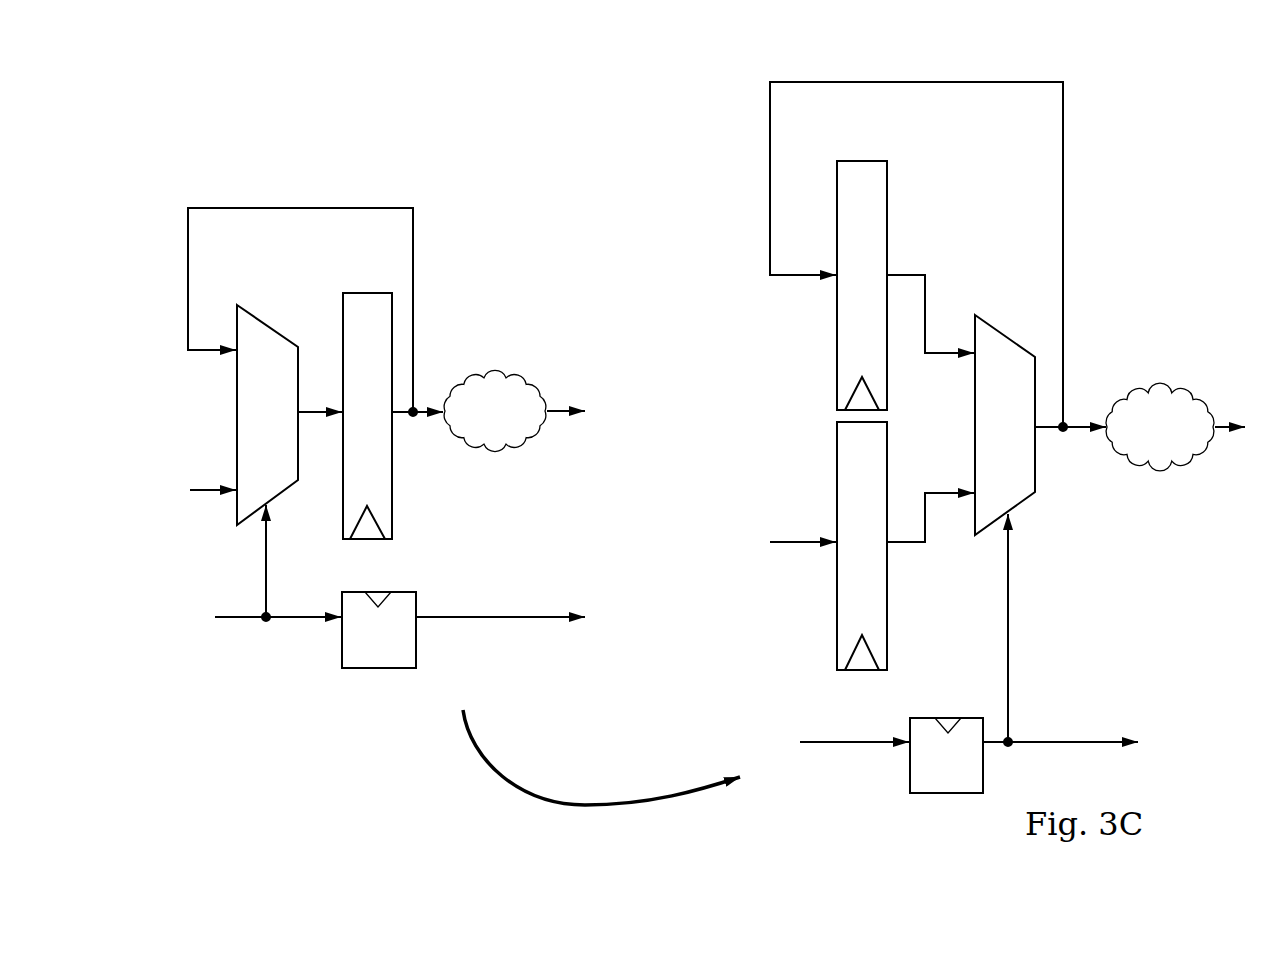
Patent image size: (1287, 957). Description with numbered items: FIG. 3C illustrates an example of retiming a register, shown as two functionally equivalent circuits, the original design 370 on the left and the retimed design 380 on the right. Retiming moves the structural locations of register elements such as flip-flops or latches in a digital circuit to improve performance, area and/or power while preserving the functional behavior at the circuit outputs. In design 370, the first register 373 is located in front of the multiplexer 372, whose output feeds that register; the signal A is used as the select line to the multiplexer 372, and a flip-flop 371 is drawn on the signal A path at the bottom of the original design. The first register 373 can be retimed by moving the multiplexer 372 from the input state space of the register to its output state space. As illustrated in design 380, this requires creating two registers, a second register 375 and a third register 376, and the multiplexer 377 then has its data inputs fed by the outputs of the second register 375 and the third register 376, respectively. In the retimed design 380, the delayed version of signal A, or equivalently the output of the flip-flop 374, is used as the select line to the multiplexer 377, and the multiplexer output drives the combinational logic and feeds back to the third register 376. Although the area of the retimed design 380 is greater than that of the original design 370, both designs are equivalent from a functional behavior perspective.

The design 370 is at (313, 168).
The flip-flop for input A 371 is at (402, 588).
The multiplexer 372 is at (246, 308).
The register D0 373 is at (381, 292).
The flip-flop 374 is at (915, 712).
The register D1 375 is at (869, 676).
The register D2 376 is at (870, 152).
The multiplexer 377 is at (993, 321).
The retimed design 380 is at (1080, 84).